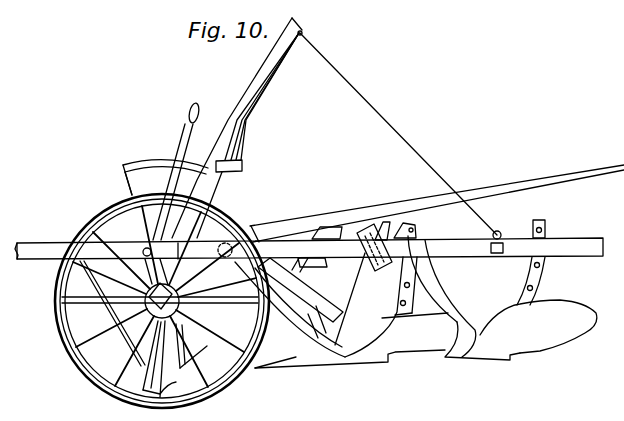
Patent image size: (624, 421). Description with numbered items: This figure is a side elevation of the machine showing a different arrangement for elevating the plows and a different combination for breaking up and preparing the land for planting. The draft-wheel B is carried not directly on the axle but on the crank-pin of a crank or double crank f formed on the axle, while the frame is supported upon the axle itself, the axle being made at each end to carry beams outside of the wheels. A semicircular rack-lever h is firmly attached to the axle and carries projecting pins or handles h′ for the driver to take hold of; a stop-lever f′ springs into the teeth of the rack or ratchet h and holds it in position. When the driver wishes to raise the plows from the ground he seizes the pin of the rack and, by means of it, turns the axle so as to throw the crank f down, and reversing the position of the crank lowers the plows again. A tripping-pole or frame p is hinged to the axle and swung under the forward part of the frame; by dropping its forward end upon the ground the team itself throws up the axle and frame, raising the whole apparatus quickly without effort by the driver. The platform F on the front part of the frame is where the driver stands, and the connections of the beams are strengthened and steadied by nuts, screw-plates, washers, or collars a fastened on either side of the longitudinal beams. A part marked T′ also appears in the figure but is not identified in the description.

The platform F is at (51, 246).
The draft-wheels B is at (162, 301).
The crank f is at (223, 163).
The stop-lever f′ is at (176, 171).
The semicircular rack-lever h is at (183, 264).
The projecting pins or handles h′ is at (112, 313).
The tripping-pole p is at (147, 359).
The nut, screw-plate, washer, or collar a is at (437, 137).
The bar T′ is at (341, 289).